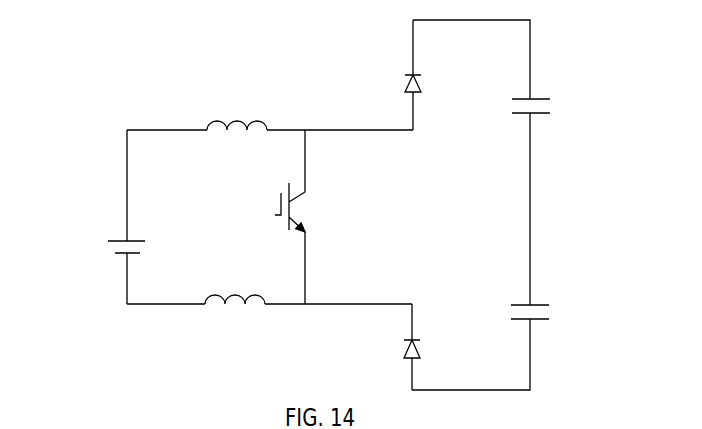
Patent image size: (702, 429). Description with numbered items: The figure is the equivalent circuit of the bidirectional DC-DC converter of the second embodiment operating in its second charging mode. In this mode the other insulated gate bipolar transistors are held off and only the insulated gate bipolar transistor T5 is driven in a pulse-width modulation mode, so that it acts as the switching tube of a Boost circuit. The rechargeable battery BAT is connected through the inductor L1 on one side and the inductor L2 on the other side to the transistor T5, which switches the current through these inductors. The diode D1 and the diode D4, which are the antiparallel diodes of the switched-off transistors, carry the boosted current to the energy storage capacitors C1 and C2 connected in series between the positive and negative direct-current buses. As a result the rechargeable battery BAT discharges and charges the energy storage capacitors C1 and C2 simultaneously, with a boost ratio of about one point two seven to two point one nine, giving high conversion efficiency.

The inductor L1 is at (237, 115).
The inductor L2 is at (235, 286).
The rechargeable battery BAT is at (103, 247).
The insulated gate bipolar transistor T5 is at (279, 217).
The diode D1 is at (425, 78).
The diode D4 is at (424, 344).
The energy storage capacitor C1 is at (545, 106).
The energy storage capacitor C2 is at (544, 313).